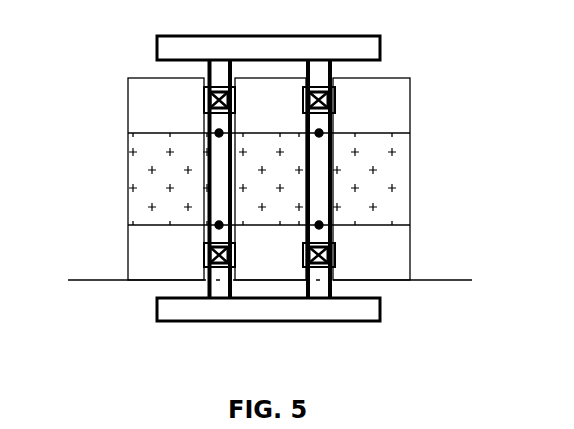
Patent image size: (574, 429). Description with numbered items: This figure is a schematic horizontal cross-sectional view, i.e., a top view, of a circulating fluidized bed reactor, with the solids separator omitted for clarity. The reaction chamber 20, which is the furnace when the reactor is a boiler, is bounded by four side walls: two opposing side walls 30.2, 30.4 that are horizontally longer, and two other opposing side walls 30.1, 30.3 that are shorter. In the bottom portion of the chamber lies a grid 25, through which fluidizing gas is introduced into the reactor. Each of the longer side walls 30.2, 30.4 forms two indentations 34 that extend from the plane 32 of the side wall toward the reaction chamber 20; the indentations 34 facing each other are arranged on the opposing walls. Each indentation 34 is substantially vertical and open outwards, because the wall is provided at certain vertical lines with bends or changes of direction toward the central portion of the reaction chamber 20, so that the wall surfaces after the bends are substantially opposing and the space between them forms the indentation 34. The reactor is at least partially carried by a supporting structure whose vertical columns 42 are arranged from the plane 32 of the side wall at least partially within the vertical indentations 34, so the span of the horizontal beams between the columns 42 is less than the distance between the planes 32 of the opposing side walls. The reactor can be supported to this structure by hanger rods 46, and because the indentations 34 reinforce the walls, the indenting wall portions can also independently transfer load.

The reaction chamber 20 is at (292, 130).
The grid 25 is at (390, 202).
The side wall 30.1 is at (410, 160).
The side wall 30.2 is at (387, 281).
The side wall 30.3 is at (128, 157).
The side wall 30.4 is at (153, 77).
The plane of the side wall 32 is at (93, 281).
The indentations 34 is at (300, 86).
The vertical columns 42 is at (205, 102).
The hanger rods 46 is at (323, 133).